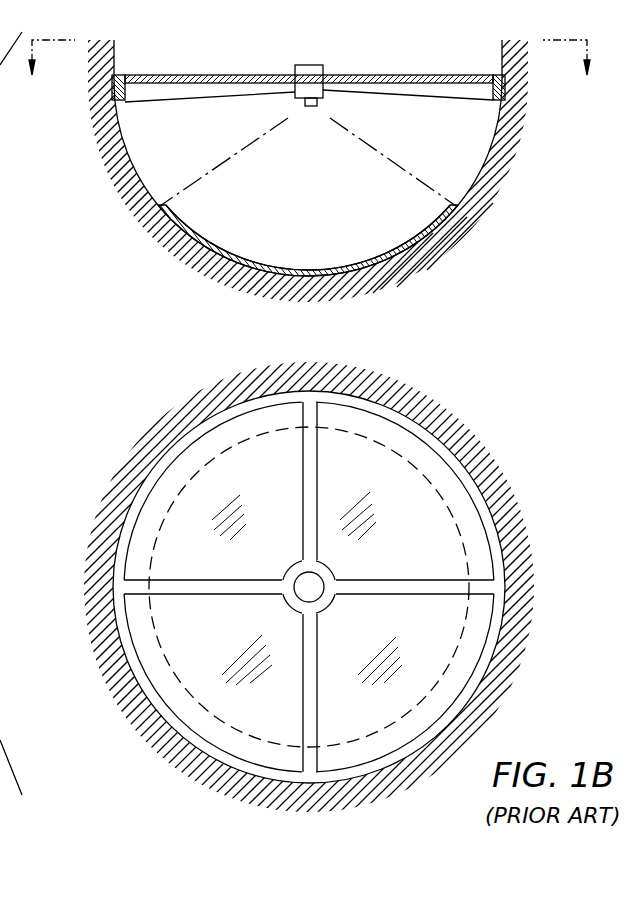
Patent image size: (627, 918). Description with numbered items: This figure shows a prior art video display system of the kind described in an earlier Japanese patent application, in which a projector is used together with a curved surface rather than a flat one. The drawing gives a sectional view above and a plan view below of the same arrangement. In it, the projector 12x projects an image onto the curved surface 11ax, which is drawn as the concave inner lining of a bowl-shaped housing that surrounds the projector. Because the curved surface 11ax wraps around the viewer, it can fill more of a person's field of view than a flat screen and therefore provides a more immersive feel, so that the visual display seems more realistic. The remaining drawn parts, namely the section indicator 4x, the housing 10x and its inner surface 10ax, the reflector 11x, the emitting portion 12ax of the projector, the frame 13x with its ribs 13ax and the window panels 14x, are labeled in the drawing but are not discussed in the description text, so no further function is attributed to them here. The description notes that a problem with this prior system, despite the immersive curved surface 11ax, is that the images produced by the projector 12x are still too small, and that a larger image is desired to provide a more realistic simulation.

The section line of FIG. 4 4x is at (310, 78).
The housing 10x is at (453, 170).
The inner surface of housing 10ax is at (482, 168).
The reflector 11x is at (340, 278).
The curved surface 11ax is at (383, 261).
The projector 12x is at (305, 65).
The light emitting portion 12ax is at (302, 105).
The frame 13x is at (505, 98).
The ribs 13ax is at (308, 487).
The windows 14x is at (200, 75).